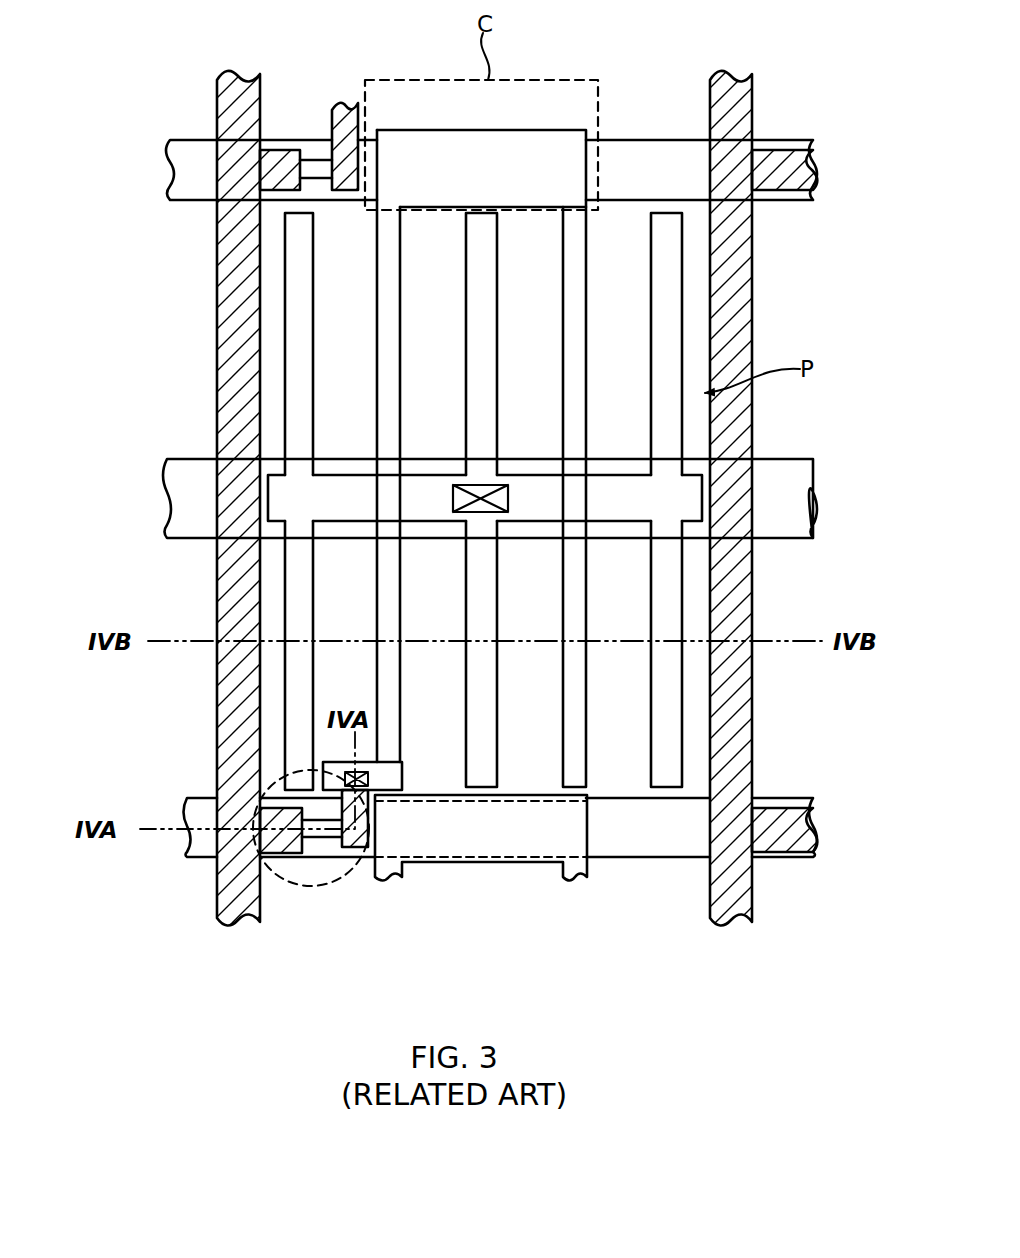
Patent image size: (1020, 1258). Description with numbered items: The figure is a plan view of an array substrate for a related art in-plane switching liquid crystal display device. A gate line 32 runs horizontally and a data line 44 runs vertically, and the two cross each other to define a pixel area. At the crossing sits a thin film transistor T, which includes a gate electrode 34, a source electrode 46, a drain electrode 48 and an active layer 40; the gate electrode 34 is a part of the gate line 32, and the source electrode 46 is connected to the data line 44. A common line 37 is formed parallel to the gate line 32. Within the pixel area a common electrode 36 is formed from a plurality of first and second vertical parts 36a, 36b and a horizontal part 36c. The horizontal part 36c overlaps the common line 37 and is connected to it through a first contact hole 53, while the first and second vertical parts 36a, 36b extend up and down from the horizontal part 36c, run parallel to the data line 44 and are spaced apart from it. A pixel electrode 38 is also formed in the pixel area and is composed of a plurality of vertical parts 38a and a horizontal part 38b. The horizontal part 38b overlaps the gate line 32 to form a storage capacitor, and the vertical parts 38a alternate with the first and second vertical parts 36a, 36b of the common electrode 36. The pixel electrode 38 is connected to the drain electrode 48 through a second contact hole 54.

The gate line 32 is at (648, 843).
The gate electrode 34 is at (300, 798).
The common electrode 36 is at (363, 501).
The first vertical part 36a is at (290, 450).
The second vertical part 36b is at (292, 570).
The horizontal part 36c is at (353, 467).
The common line 37 is at (795, 540).
The pixel electrode 38 is at (607, 460).
The vertical parts of the pixel electrode 38a is at (587, 325).
The horizontal part of the pixel electrode 38b is at (573, 167).
The active layer 40 is at (320, 860).
The data line 44 is at (740, 690).
The source electrode 46 is at (282, 860).
The drain electrode 48 is at (365, 860).
The first contact hole 53 is at (478, 480).
The second contact hole 54 is at (372, 778).
The thin film transistor T is at (338, 878).